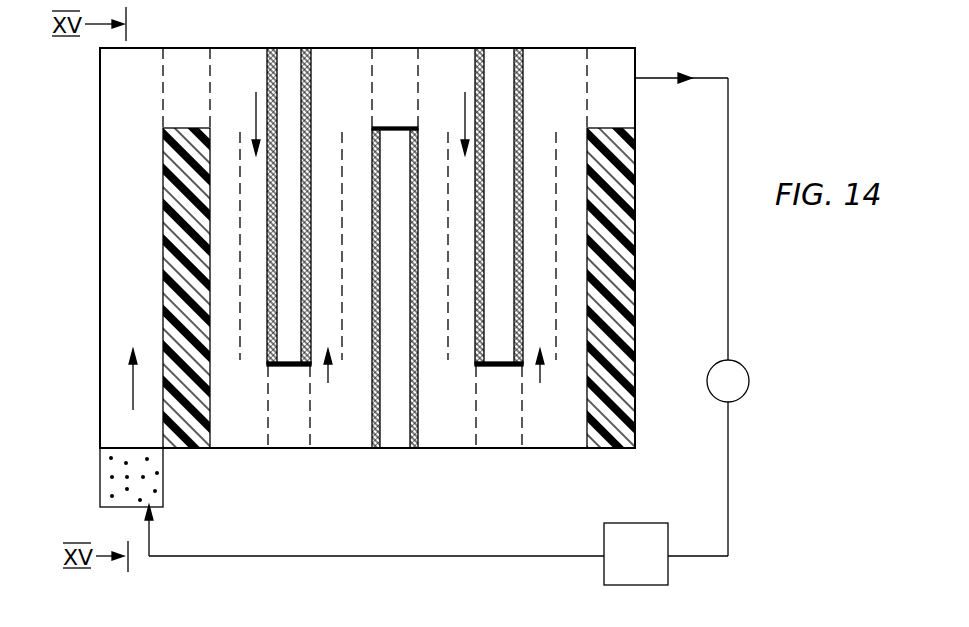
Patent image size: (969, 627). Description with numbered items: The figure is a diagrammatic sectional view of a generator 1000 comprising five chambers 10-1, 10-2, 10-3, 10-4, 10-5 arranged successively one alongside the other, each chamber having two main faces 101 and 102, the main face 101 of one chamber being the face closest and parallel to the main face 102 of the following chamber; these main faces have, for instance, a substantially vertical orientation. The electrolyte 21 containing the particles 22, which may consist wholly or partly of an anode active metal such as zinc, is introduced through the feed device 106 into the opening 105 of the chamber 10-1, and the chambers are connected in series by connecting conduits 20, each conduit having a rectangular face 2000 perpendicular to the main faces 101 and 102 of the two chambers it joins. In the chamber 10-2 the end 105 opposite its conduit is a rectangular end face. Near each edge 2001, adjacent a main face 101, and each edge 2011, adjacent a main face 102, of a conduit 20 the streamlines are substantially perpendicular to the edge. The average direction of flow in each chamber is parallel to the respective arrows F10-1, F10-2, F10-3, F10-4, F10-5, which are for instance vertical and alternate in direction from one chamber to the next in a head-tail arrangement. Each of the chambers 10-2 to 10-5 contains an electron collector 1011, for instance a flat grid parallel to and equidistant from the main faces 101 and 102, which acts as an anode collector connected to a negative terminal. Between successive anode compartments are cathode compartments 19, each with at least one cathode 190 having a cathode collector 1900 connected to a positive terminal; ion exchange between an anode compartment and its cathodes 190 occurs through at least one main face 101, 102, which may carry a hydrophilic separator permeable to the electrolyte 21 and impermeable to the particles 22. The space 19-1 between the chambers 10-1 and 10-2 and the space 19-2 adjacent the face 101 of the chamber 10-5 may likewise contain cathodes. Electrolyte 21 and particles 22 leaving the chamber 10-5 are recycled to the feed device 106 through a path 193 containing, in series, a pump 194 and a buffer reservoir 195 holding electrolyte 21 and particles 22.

The generator 1000 is at (594, 26).
The cathode compartment 19 is at (293, 47).
The space between chambers 10-1 and 10-2 19-1 is at (186, 448).
The space adjacent to face 101 of chamber 10-5 19-2 is at (587, 448).
The connecting conduit 20 is at (181, 47).
The cathode collector 1900 is at (411, 148).
The electron collector 1011 is at (237, 147).
The rectangular face of the conduit 2000 is at (180, 128).
The edge of connecting conduit 2001 is at (163, 127).
The edge of connecting conduit 2011 is at (210, 128).
The first chamber 10-1 is at (100, 193).
The second chamber 10-2 is at (252, 47).
The third chamber 10-3 is at (355, 47).
The fourth chamber 10-4 is at (464, 47).
The fifth chamber 10-5 is at (573, 47).
The main face 101 is at (164, 232).
The main face 102 is at (102, 179).
The cathode 190 is at (301, 248).
The arrow indicating average flow direction in chamber 10-1 F10-1 is at (130, 392).
The arrow indicating average flow direction in chamber 10-2 F10-2 is at (253, 138).
The arrow indicating average flow direction in chamber 10-3 F10-3 is at (328, 383).
The arrow indicating average flow direction in chamber 10-4 F10-4 is at (462, 138).
The arrow indicating average flow direction in chamber 10-5 F10-5 is at (542, 380).
The opening of the chamber 105 is at (158, 447).
The feed device 106 is at (100, 496).
The particles 22 is at (149, 459).
The electrolyte 21 is at (157, 494).
The path 193 is at (728, 156).
The pump 194 is at (736, 365).
The buffer reservoir 195 is at (668, 570).